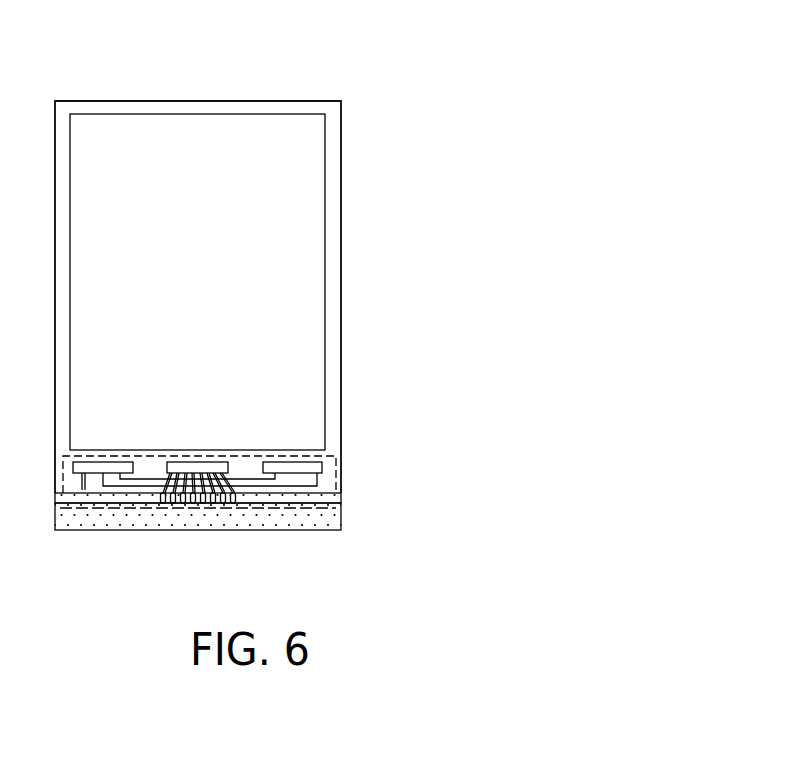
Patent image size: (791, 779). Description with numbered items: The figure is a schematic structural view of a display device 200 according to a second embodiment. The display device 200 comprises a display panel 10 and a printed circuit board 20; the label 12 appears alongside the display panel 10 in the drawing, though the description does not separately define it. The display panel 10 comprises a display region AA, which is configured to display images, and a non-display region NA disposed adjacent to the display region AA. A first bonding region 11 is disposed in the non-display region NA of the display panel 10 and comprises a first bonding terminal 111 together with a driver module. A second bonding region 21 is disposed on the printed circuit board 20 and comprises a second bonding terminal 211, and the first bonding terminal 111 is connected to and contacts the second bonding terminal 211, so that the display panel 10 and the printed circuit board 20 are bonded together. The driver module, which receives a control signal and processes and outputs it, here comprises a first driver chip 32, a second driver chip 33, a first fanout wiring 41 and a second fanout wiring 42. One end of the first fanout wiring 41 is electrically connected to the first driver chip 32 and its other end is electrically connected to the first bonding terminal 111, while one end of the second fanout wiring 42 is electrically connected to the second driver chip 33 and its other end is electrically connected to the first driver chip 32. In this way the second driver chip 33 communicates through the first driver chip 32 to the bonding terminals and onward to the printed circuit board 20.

The display device 200 is at (124, 67).
The display panel 10 is at (259, 297).
The cover plate 12 is at (341, 213).
The non-display region NA is at (334, 290).
The display region AA is at (300, 368).
The first bonding region 11 is at (338, 457).
The first bonding terminal 111 is at (332, 498).
The printed circuit board 20 is at (326, 525).
The second bonding region 21 is at (293, 510).
The second bonding terminal 211 is at (178, 503).
The first driver chip 32 is at (213, 468).
The second driver chip 33 is at (86, 468).
The first fanout wiring 41 is at (218, 497).
The second fanout wiring 42 is at (141, 480).